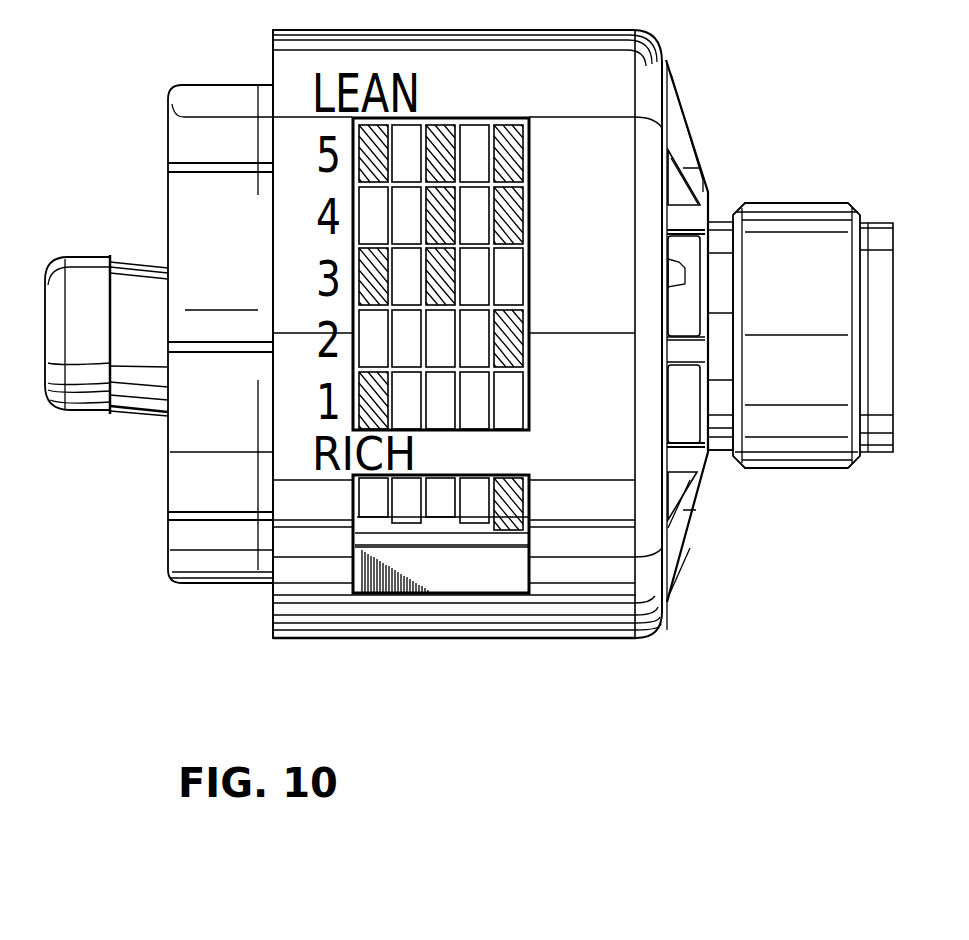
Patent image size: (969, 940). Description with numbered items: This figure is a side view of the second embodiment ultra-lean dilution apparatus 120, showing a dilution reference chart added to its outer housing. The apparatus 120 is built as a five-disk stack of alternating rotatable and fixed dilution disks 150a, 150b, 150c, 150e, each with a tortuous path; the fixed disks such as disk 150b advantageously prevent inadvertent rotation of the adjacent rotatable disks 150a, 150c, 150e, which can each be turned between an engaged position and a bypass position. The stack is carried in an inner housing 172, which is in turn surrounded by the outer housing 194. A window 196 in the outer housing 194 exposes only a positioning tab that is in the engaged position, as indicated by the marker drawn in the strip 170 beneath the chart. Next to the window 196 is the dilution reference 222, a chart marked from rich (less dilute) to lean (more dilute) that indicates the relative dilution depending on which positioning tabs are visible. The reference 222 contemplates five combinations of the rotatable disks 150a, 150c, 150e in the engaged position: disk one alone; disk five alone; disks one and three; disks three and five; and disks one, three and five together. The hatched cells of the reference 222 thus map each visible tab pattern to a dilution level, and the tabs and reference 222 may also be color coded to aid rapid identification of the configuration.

The ultra-lean dilution apparatus 120 is at (150, 677).
The dilution reference 222 is at (537, 120).
The rotatable dilution disk 150a is at (370, 517).
The fixed dilution disk 150b is at (407, 527).
The rotatable dilution disk 150c is at (437, 517).
The rotatable dilution disk 150e is at (500, 536).
The indicator strip 170 is at (396, 600).
The inner housing 172 is at (687, 546).
The outer housing 194 is at (326, 623).
The window 196 is at (343, 590).